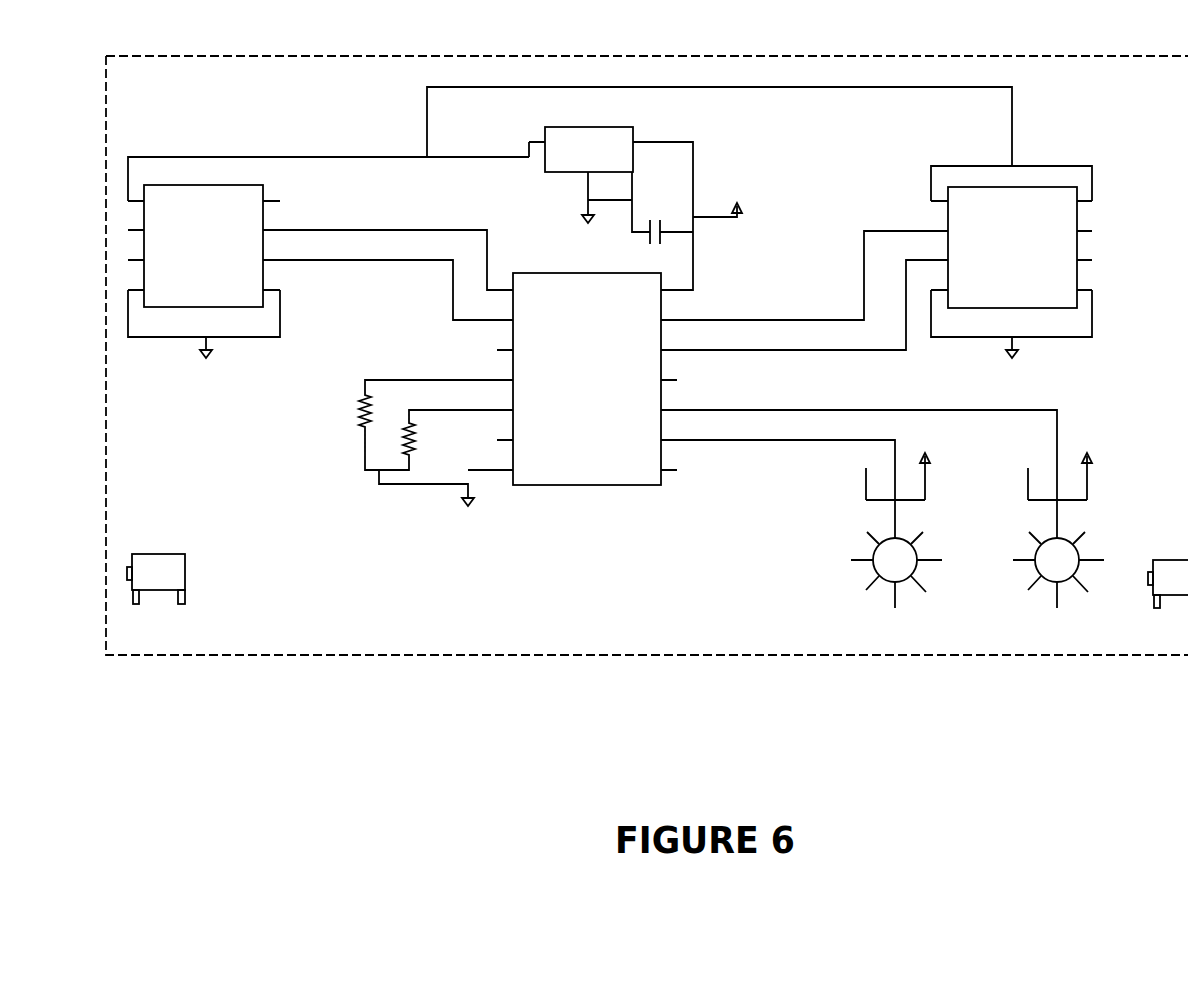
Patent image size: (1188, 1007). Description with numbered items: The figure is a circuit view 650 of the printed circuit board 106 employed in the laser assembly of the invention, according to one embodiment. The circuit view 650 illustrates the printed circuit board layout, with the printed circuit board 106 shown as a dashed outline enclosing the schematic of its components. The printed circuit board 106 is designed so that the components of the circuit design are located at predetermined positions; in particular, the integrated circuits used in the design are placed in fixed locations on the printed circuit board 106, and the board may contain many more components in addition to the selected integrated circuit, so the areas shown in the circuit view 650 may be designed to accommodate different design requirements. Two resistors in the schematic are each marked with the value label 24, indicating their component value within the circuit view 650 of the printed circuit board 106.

The printed circuit board 106 is at (971, 655).
The circuit view 650 is at (647, 453).
The resistor value (U$4, U$5) 24 is at (426, 425).